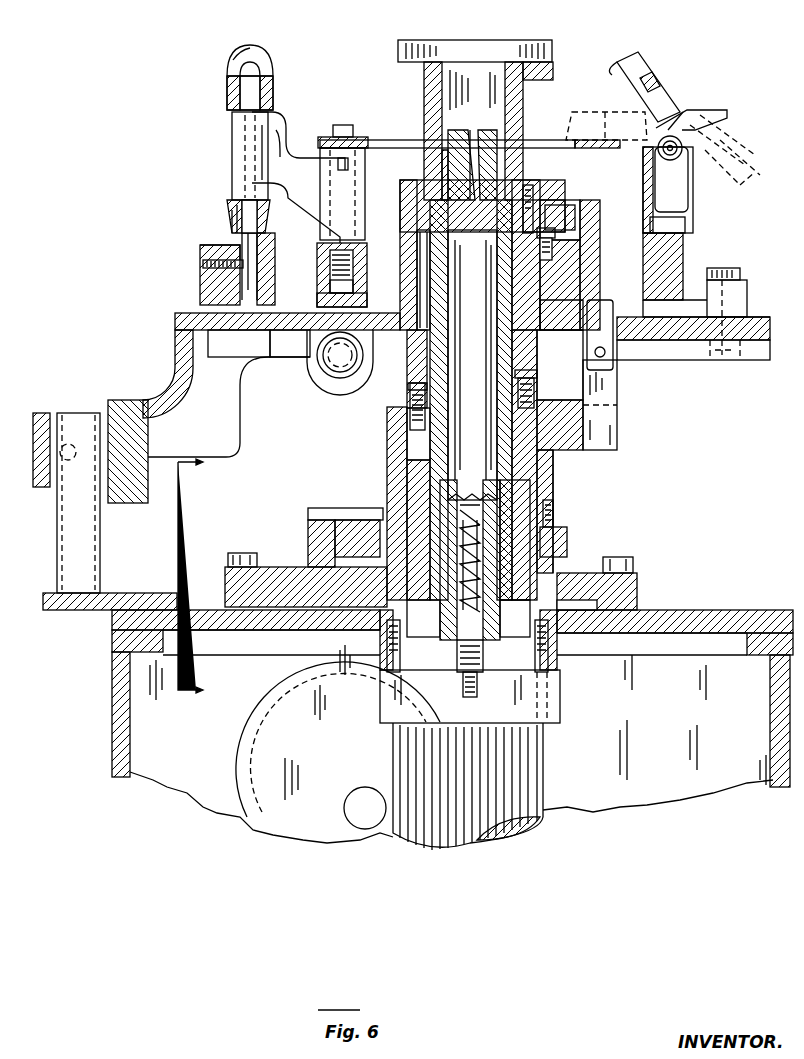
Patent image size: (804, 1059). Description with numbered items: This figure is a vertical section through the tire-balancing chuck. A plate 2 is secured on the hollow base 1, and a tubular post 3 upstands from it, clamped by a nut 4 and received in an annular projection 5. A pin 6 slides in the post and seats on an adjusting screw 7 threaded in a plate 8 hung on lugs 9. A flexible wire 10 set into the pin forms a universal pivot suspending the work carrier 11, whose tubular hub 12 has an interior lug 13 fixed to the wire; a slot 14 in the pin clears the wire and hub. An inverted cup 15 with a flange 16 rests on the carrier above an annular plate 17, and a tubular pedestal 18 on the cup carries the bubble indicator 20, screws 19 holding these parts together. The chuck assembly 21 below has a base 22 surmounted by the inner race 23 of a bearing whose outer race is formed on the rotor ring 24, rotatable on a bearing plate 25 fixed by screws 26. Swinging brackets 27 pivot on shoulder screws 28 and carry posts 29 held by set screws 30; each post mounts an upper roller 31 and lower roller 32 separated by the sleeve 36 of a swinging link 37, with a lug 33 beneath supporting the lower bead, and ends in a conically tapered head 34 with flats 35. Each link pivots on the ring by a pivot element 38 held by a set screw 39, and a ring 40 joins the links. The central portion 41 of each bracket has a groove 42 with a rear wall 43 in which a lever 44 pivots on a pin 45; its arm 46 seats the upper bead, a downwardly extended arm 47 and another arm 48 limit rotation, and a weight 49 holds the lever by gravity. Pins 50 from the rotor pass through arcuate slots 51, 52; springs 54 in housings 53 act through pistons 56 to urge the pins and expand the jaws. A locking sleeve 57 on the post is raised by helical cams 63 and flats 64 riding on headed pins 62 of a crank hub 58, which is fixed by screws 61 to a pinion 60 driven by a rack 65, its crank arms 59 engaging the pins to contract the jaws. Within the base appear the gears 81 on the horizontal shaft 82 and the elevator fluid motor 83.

The hollow base 1 is at (112, 717).
The plate 2 is at (225, 585).
The tubular post 3 is at (553, 482).
The nut 4 is at (468, 576).
The annular projection 5 is at (553, 499).
The pin 6 is at (470, 458).
The adjusting screw 7 is at (479, 686).
The plate 8 is at (560, 708).
The lugs 9 is at (557, 660).
The flexible wire 10 is at (497, 162).
The work carrier 11 is at (555, 230).
The tubular hub 12 is at (520, 190).
The interior lug 13 is at (420, 185).
The slot 14 is at (442, 160).
The inverted cup 15 is at (575, 212).
The inwardly projecting flange 16 is at (535, 195).
The annular plate 17 is at (522, 245).
The tubular pedestal 18 is at (523, 104).
The screws 19 is at (552, 245).
The bubble indicator 20 is at (398, 56).
The chuck assembly 21 is at (172, 338).
The base 22 is at (170, 362).
The inner race 23 is at (317, 252).
The rotor ring 24 is at (330, 287).
The bearing plate 25 is at (317, 300).
The screws 26 is at (259, 343).
The swinging brackets 27 is at (200, 290).
The shoulder screws 28 is at (735, 268).
The posts 29 is at (230, 225).
The set screws 30 is at (203, 264).
The upper roller 31 is at (227, 92).
The lower roller 32 is at (227, 208).
The lug 33 is at (200, 247).
The conically tapered head 34 is at (232, 55).
The flats 35 is at (262, 68).
The sleeve 36 is at (232, 148).
The swinging link 37 is at (287, 125).
The pivot element 38 is at (366, 140).
The set screw 39 is at (330, 268).
The ring 40 is at (380, 142).
The central portion 41 is at (643, 185).
The vertical groove 42 is at (685, 225).
The rear wall 43 is at (672, 170).
The levers 44 is at (712, 134).
The pins 45 is at (660, 152).
The arm 46 is at (680, 90).
The downwardly extended arm 47 is at (745, 168).
The arm 48 is at (655, 72).
The weight 49 is at (618, 62).
The pins 50 is at (613, 366).
The arcuate slot 51 is at (693, 333).
The arcuate slot 52 is at (693, 348).
The spring housings 53 is at (333, 378).
The spring 54 is at (345, 378).
The hollowed piston 56 is at (317, 375).
The locking sleeve 57 is at (537, 338).
The hub 58 is at (556, 462).
The crank arms 59 is at (617, 392).
The pinion 60 is at (567, 540).
The screws 61 is at (555, 520).
The headed pins 62 is at (534, 392).
The helically inclined cams 63 is at (410, 385).
The flat 64 is at (537, 375).
The rack 65 is at (345, 520).
The gears 81 is at (258, 732).
The horizontal shaft 82 is at (351, 804).
The fluid motor 83 is at (546, 776).